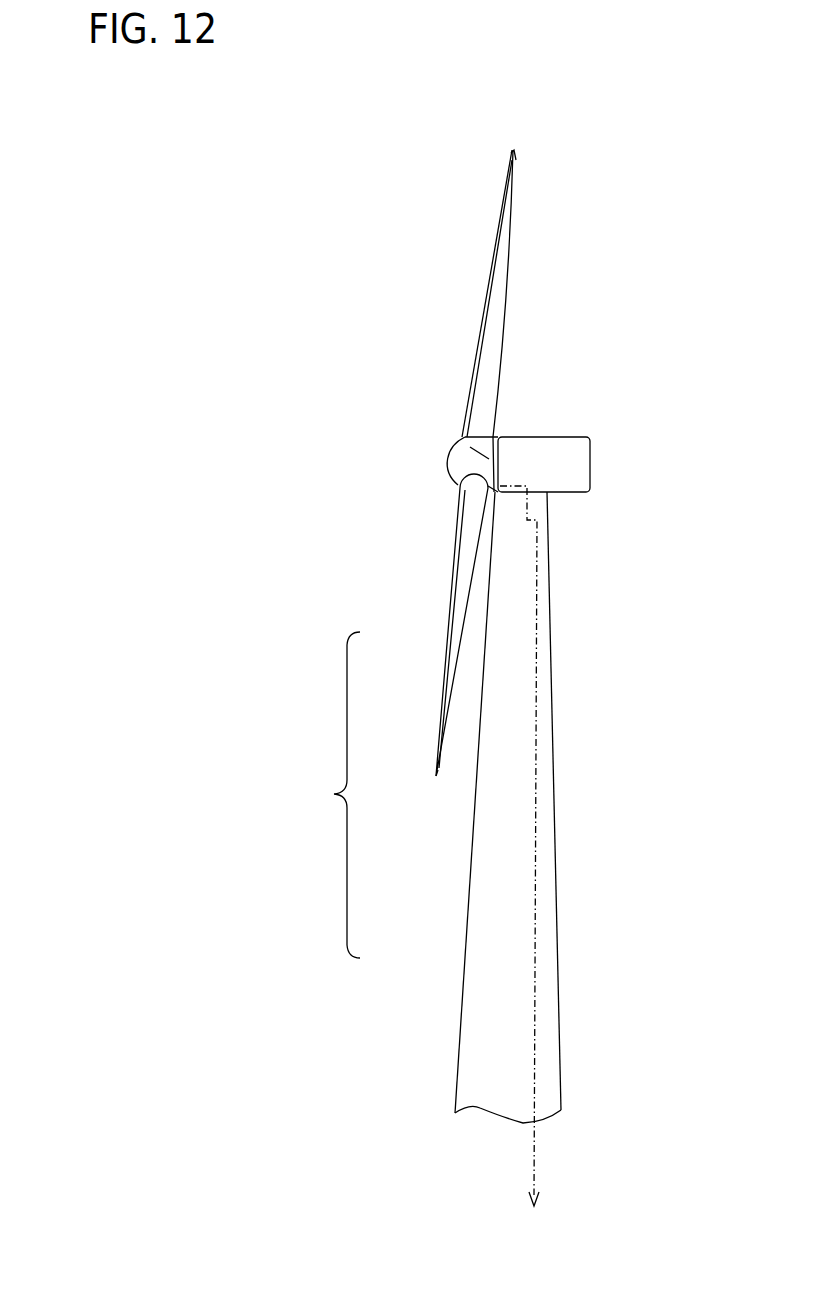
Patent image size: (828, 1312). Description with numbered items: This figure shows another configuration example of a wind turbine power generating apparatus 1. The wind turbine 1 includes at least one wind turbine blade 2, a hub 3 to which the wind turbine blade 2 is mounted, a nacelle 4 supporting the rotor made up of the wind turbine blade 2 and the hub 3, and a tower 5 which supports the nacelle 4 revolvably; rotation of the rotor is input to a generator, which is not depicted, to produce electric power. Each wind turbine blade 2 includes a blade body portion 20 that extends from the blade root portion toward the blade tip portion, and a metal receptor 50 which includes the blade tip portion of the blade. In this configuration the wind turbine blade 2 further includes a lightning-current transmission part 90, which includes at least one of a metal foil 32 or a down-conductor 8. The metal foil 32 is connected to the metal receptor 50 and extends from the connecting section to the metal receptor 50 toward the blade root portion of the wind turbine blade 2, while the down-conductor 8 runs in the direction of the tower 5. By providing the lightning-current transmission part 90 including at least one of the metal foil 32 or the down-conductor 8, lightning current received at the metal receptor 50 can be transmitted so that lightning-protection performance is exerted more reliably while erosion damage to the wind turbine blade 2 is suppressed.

The wind turbine power generating apparatus 1 is at (646, 246).
The wind turbine blade 2 is at (509, 300).
The hub 3 is at (446, 452).
The nacelle 4 is at (591, 465).
The tower 5 is at (550, 676).
The down-conductor 8 is at (533, 902).
The blade body portion 20 is at (503, 368).
The metal foil 32 is at (481, 321).
The metal receptor 50 is at (517, 167).
The lightning-current transmission part 90 is at (328, 795).